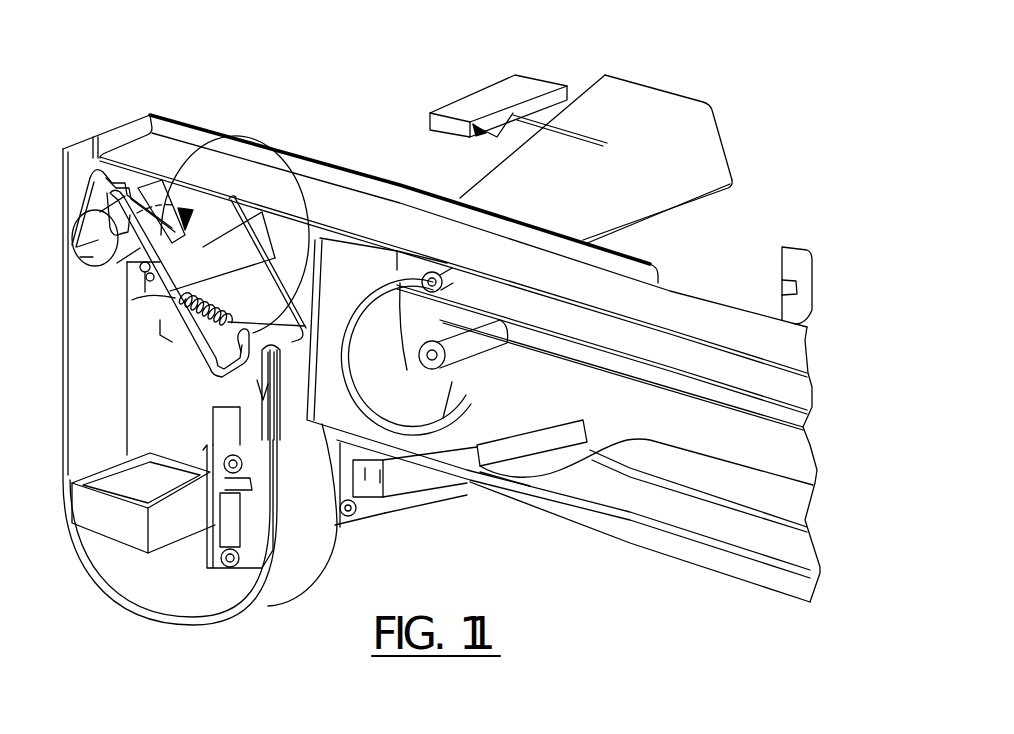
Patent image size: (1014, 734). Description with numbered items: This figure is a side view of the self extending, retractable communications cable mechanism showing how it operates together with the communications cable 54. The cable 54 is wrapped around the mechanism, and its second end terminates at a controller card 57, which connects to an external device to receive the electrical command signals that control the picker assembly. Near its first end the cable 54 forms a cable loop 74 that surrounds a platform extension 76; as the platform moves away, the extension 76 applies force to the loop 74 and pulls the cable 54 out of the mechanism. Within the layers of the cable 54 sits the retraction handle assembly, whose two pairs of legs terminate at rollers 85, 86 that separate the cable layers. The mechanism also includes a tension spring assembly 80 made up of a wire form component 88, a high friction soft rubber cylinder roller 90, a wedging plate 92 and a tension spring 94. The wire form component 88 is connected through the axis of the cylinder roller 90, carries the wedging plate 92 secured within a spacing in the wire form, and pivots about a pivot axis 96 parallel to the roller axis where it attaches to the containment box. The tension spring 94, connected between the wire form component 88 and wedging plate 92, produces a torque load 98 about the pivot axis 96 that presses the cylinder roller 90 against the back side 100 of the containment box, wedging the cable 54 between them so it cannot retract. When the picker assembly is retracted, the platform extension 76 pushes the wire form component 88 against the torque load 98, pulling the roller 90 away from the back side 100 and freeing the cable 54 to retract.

The communications cable 54 is at (97, 397).
The controller card 57 is at (518, 90).
The cable loop 74 is at (258, 612).
The platform extension 76 is at (170, 523).
The tension spring assembly 80 is at (185, 346).
The roller 85 is at (446, 268).
The roller 86 is at (467, 350).
The wire form component 88 is at (163, 343).
The cylinder roller 90 is at (97, 262).
The wedging plate 92 is at (212, 248).
The tension spring 94 is at (290, 225).
The pivot axis 96 is at (158, 172).
The torque load 98 is at (186, 206).
The back side of containment box 100 is at (65, 143).